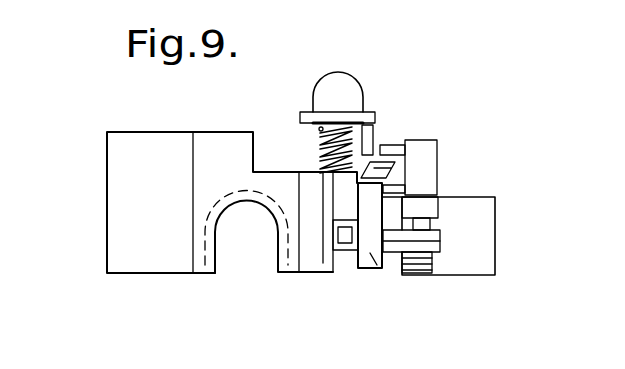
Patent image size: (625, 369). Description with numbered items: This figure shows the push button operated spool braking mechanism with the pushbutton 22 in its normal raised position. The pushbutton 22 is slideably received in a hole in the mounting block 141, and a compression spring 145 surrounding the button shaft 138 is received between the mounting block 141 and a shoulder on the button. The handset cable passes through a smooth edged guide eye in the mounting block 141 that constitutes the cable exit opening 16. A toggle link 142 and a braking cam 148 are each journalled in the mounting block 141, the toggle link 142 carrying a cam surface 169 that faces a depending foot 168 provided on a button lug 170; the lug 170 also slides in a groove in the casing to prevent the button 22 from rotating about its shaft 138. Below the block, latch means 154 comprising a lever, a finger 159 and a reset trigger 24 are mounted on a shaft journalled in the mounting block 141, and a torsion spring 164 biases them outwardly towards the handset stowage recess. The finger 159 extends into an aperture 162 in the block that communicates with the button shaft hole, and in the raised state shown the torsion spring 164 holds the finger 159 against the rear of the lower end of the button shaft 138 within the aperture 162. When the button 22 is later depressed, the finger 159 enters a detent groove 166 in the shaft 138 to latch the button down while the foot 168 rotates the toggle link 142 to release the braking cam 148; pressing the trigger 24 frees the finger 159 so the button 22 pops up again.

The mounting block 141 is at (120, 167).
The cable exit opening 16 is at (245, 252).
The shaft 138 is at (320, 275).
The detent groove 166 is at (333, 230).
The aperture 162 is at (340, 250).
The finger 159 is at (372, 255).
The reset trigger 24 is at (383, 263).
The pushbutton 22 is at (352, 81).
The compression spring 145 is at (315, 140).
The button lug 170 is at (375, 137).
The depending foot 168 is at (395, 138).
The cam surface 169 is at (378, 176).
The toggle link 142 is at (412, 180).
The braking cam 148 is at (404, 130).
The latch means 154 is at (450, 239).
The torsion spring 164 is at (440, 268).